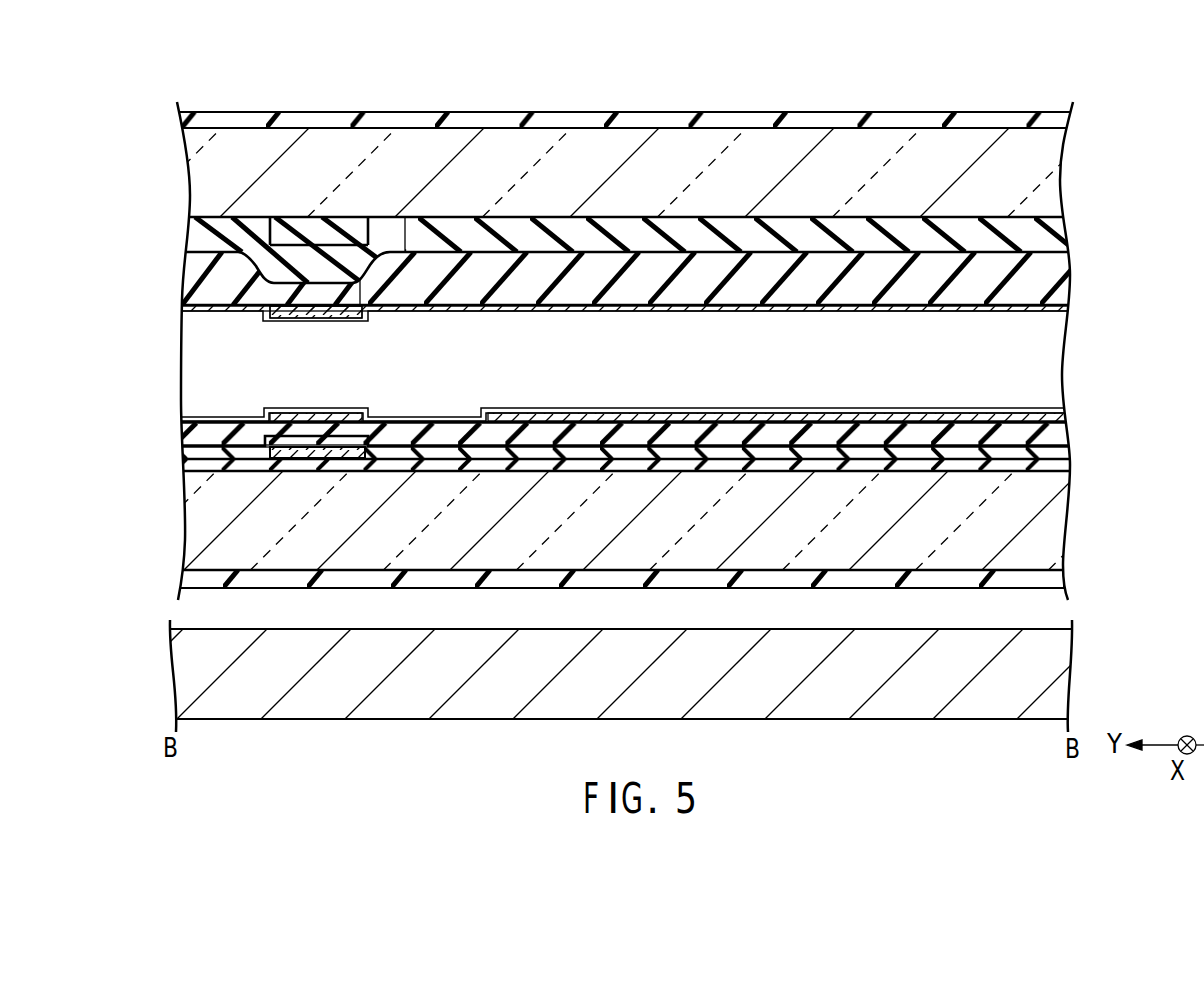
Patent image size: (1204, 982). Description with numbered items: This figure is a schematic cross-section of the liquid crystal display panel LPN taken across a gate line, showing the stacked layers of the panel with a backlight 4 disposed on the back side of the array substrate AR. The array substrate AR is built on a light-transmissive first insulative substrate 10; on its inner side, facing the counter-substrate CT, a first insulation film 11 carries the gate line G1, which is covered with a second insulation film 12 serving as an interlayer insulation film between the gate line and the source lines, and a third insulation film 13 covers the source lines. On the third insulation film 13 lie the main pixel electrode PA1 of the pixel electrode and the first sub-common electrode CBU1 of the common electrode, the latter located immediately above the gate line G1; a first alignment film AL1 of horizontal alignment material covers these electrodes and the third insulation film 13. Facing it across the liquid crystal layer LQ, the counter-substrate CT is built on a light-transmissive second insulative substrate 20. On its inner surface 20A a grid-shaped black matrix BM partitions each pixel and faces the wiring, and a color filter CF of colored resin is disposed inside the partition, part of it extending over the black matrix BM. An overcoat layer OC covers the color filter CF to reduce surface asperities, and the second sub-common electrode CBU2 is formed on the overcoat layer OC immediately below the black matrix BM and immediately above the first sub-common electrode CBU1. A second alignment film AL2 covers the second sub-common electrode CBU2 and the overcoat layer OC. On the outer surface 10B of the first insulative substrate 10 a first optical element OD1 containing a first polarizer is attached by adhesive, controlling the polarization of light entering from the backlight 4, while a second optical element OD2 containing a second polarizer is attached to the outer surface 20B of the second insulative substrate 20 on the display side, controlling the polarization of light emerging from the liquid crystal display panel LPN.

The liquid crystal display panel LPN is at (1088, 108).
The counter-substrate CT is at (182, 190).
The array substrate AR is at (180, 540).
The liquid crystal layer LQ is at (205, 373).
The second insulative substrate 20 is at (1050, 170).
The inner surface of the second insulative substrate 20A is at (205, 218).
The outer surface of the second insulative substrate 20B is at (255, 117).
The second optical element OD2 is at (190, 115).
The black matrix BM is at (332, 232).
The color filter CF is at (1050, 233).
The overcoat layer OC is at (1053, 280).
The second alignment film AL2 is at (1045, 310).
The second sub-common electrode CBU2 is at (350, 312).
The first alignment film AL1 is at (1030, 405).
The first sub-common electrode CBU1 is at (293, 415).
The main pixel electrode PA1 is at (762, 420).
The third insulation film 13 is at (1062, 420).
The second insulation film 12 is at (1055, 440).
The first insulation film 11 is at (1062, 465).
The gate line G1 is at (323, 460).
The first insulative substrate 10 is at (1050, 533).
The outer surface of the first insulative substrate 10B is at (213, 581).
The first optical element OD1 is at (195, 580).
The backlight 4 is at (1053, 685).